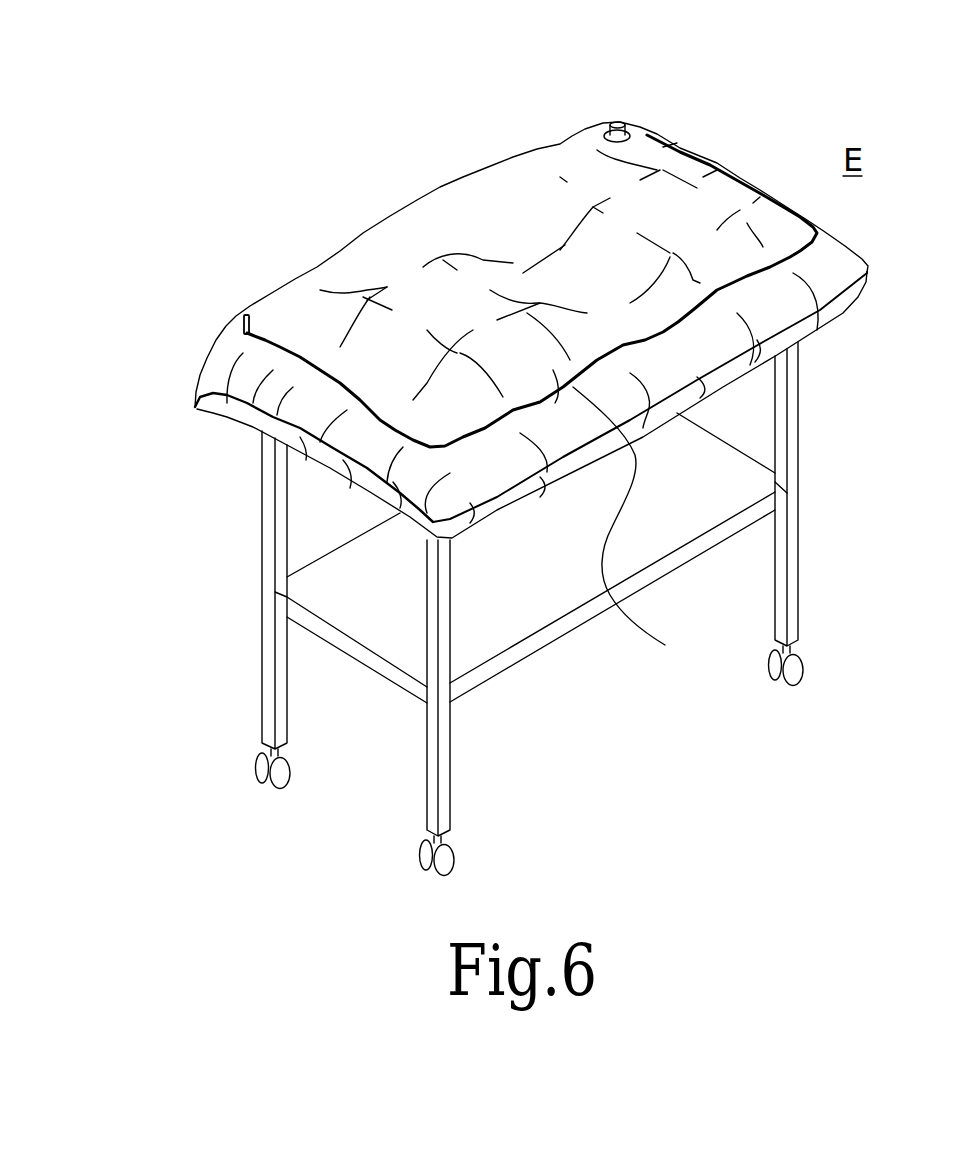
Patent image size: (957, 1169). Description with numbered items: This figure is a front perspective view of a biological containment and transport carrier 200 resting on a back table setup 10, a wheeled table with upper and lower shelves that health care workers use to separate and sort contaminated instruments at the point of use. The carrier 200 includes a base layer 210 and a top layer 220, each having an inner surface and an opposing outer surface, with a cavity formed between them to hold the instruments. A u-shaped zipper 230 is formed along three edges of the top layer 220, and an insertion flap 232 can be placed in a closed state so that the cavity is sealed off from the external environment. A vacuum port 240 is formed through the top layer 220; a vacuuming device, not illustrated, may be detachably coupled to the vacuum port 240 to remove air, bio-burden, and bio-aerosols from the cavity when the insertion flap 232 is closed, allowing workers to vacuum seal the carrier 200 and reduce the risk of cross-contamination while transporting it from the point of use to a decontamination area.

The back table setup 10 is at (225, 563).
The biological containment and transport carrier 200 is at (227, 249).
The base layer 210 is at (223, 403).
The top layer 220 is at (243, 378).
The u-shaped zipper 230 is at (640, 527).
The insertion flap 232 is at (244, 316).
The vacuum port 240 is at (618, 121).